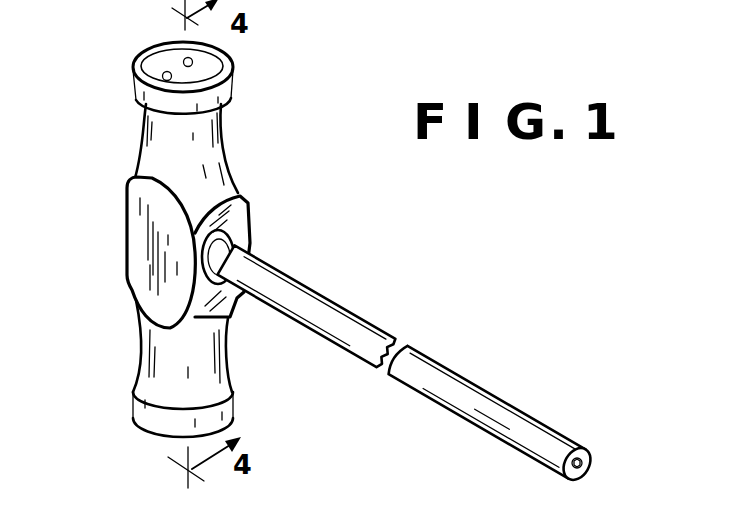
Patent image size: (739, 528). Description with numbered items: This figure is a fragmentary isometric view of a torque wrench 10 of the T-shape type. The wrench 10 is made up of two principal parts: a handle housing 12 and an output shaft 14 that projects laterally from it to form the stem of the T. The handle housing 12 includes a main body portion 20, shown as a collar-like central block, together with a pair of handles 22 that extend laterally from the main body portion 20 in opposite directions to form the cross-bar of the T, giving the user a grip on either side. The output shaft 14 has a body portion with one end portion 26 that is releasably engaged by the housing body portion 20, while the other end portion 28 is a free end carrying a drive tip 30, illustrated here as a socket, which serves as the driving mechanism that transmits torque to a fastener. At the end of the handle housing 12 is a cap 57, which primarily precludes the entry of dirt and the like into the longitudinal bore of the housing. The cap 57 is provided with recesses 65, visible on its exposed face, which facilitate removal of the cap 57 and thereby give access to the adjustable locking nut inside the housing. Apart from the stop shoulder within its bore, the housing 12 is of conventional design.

The torque wrench 10 is at (347, 258).
The handle housing 12 is at (192, 231).
The output shaft 14 is at (435, 368).
The main body portion 20 is at (184, 252).
The handles 22 is at (142, 131).
The end portion 26 is at (243, 244).
The end portion 28 is at (586, 448).
The drive tip 30 is at (588, 464).
The cap 57 is at (163, 62).
The recesses 65 is at (172, 76).